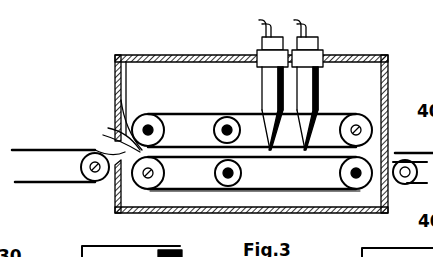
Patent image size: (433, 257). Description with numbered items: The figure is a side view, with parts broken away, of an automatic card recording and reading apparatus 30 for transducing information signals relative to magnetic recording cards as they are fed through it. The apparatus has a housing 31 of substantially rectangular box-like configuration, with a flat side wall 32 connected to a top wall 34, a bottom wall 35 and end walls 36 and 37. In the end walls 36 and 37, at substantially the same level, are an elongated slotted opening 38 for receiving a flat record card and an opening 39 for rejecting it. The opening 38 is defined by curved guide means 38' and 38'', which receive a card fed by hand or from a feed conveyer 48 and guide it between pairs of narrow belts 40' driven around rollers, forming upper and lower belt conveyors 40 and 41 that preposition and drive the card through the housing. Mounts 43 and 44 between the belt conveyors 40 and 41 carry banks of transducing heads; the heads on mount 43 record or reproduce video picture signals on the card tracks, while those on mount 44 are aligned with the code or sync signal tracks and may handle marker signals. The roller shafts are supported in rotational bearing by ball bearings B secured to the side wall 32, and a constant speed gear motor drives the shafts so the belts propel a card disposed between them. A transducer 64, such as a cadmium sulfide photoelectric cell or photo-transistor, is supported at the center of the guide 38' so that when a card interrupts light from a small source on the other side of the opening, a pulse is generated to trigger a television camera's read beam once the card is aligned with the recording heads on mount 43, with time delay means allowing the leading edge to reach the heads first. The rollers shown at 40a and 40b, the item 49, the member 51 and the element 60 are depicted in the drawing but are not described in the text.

The apparatus 30 is at (68, 38).
The housing 31 is at (144, 54).
The side wall 32 is at (432, 63).
The top wall 34 is at (346, 57).
The bottom wall 35 is at (185, 213).
The end wall 36 is at (114, 68).
The end wall 37 is at (388, 67).
The slotted opening 38 is at (104, 132).
The curved guide means 38' is at (134, 186).
The curved guide means 38'' is at (115, 120).
The slotted opening 39 is at (388, 153).
The belt conveyor 40 is at (252, 115).
The upper belt roller 40a is at (158, 129).
The lower conveyor belt 40b is at (158, 173).
The narrow belts 40' is at (358, 116).
The belt conveyor 41 is at (170, 187).
The mount 43 is at (262, 88).
The mount 44 is at (314, 82).
The feed conveyer 48 is at (33, 149).
The exit roller 49 is at (405, 185).
The tray 51 is at (82, 248).
The guide member 60 is at (114, 128).
The transducer 64 is at (91, 156).
The ball bearings B is at (428, 144).